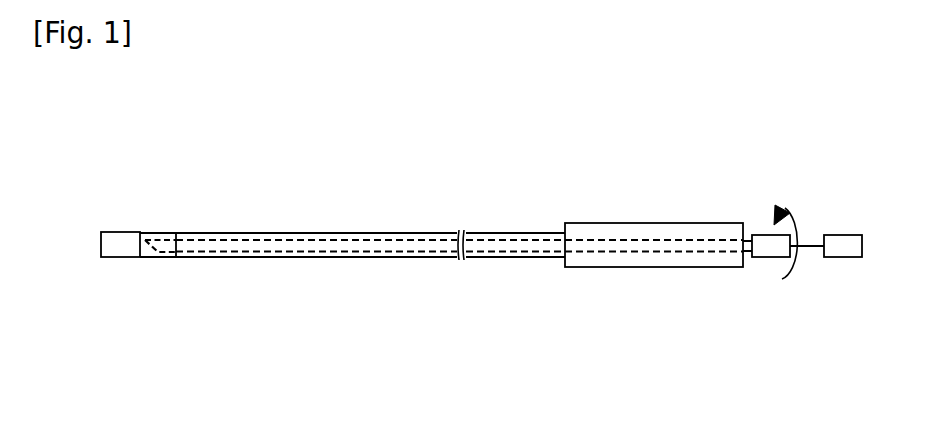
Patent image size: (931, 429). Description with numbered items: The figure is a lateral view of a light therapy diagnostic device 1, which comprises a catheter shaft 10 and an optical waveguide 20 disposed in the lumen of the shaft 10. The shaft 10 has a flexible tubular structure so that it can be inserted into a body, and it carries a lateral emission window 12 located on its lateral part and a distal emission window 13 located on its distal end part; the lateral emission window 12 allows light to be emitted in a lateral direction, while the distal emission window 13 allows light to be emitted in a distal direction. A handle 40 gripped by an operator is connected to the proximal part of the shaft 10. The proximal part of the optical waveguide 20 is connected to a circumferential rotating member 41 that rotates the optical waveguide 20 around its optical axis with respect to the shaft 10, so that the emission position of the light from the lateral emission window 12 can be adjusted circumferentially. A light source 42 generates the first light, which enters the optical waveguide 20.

The light therapy diagnostic device 1 is at (117, 174).
The catheter shaft 10 is at (407, 233).
The lateral emission window 12 is at (155, 235).
The distal emission window 13 is at (101, 246).
The optical waveguide 20 is at (310, 240).
The handle 40 is at (618, 223).
The circumferential rotating member 41 is at (768, 258).
The light source 42 is at (842, 258).